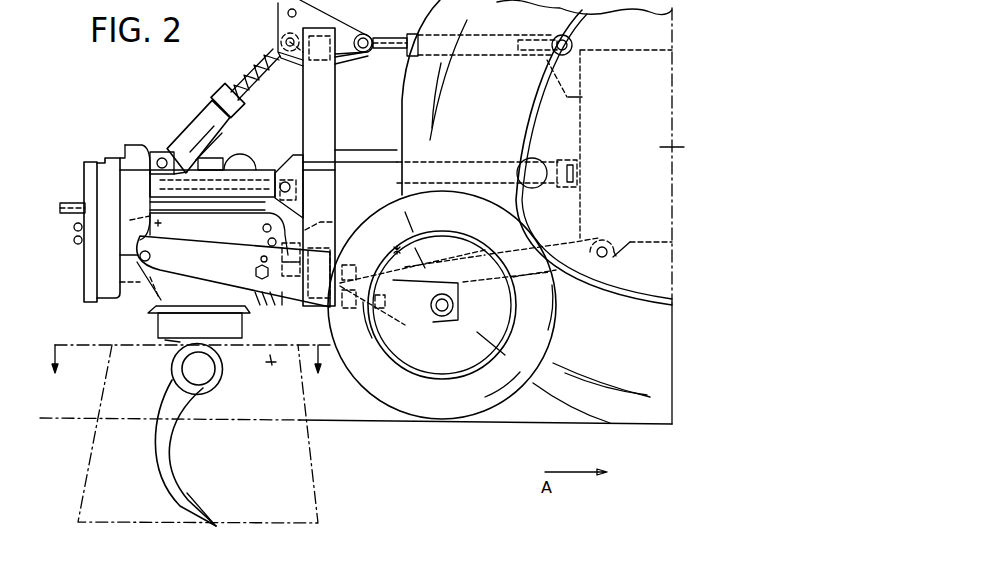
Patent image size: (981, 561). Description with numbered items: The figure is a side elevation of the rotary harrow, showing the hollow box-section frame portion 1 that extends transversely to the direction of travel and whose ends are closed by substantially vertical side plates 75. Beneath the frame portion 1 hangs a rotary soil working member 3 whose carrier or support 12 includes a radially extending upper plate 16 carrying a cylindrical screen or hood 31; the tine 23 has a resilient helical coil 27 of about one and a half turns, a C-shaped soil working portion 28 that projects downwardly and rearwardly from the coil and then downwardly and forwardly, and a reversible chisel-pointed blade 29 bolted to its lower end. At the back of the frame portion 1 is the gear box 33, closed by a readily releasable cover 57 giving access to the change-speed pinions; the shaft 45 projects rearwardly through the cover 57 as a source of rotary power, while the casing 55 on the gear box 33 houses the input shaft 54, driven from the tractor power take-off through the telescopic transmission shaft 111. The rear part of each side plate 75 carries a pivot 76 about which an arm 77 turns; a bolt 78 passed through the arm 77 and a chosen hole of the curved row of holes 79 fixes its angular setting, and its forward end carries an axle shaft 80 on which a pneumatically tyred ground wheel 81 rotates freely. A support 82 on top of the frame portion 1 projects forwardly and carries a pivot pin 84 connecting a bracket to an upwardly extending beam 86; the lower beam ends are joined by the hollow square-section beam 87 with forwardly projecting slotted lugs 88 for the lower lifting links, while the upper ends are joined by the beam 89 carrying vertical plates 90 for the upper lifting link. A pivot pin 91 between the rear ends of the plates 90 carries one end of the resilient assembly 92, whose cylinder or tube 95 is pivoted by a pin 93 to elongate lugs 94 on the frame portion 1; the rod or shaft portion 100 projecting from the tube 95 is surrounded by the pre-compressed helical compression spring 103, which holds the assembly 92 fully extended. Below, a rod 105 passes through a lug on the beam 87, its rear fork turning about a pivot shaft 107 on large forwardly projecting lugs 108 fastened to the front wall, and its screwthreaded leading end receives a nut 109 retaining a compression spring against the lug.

The hollow box-section frame portion 1 is at (141, 216).
The rotary soil working member 3 is at (322, 505).
The carrier or support 12 is at (262, 362).
The upper plate 16 is at (170, 343).
The tine 23 is at (182, 453).
The helical coil 27 is at (180, 381).
The soil working portion 28 is at (165, 457).
The blade 29 is at (210, 518).
The cylindrical screen or hood 31 is at (159, 333).
The gear box 33 is at (104, 300).
The shaft 45 is at (76, 202).
The shaft 54 is at (203, 158).
The casing 55 is at (126, 146).
The cover 57 is at (85, 280).
The side plates 75 is at (150, 293).
The pivots 76 is at (151, 257).
The arm 77 is at (210, 248).
The bolts 78 is at (255, 272).
The holes 79 is at (268, 240).
The axle shaft 80 is at (442, 316).
The ground wheel 81 is at (498, 418).
The support 82 is at (268, 158).
The pivot pin 84 is at (290, 187).
The beam 86 is at (336, 119).
The beam 87 is at (324, 228).
The lugs 88 is at (378, 258).
The beam 89 is at (325, 28).
The plates 90 is at (358, 32).
The pivot pin 91 is at (286, 38).
The resilient assembly 92 is at (226, 108).
The pin 93 is at (171, 148).
The elongate lugs 94 is at (147, 150).
The cylinder or tube 95 is at (196, 118).
The rod or shaft portion 100 is at (262, 58).
The helical compression spring 103 is at (249, 90).
The rod 105 is at (391, 298).
The pivot shaft 107 is at (258, 302).
The lugs 108 is at (278, 305).
The nut 109 is at (357, 324).
The telescopic transmission shaft 111 is at (382, 162).